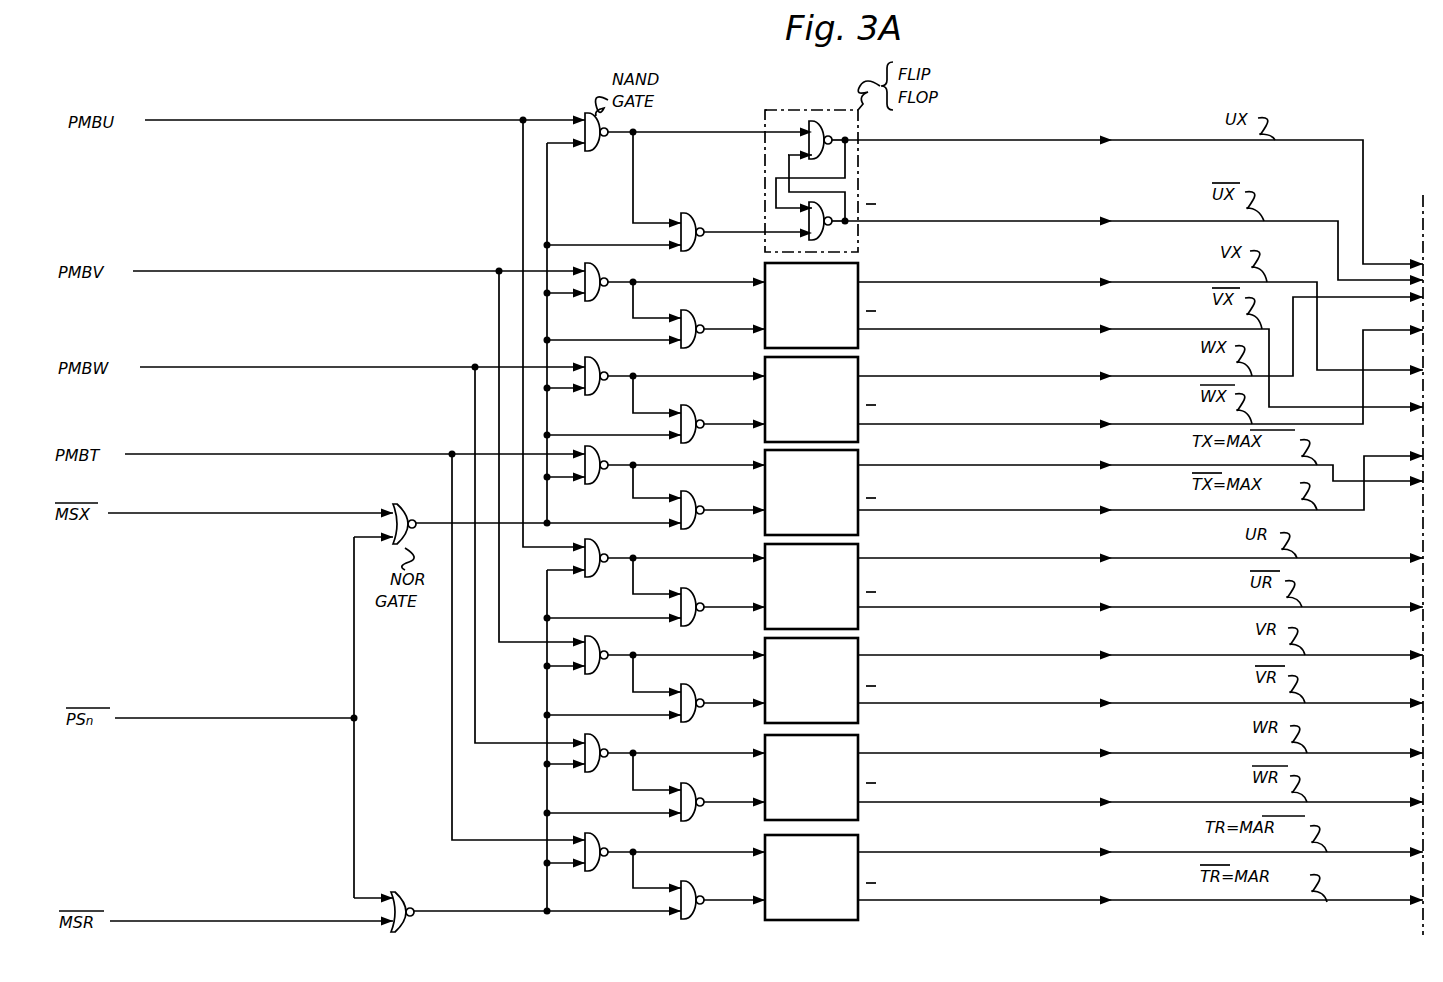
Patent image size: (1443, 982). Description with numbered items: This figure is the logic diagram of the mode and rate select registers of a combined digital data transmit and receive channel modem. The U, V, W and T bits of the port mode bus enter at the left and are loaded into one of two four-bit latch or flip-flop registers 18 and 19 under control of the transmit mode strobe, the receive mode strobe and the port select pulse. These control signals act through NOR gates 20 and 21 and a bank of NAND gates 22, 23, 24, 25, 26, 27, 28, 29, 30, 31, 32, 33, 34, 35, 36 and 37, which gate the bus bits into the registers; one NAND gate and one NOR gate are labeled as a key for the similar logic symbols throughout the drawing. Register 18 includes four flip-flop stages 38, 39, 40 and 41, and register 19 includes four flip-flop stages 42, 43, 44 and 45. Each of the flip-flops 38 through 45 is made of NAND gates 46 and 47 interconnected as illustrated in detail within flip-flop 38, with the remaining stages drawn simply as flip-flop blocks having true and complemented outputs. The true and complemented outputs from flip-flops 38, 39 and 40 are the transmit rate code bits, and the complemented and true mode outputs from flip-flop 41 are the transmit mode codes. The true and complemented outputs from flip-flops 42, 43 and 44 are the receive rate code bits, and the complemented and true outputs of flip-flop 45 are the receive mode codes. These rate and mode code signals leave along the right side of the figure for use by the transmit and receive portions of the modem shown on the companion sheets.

The four-bit latch register 18 is at (748, 118).
The four-bit latch register 19 is at (753, 549).
The NOR gate 20 is at (398, 504).
The NOR gate 21 is at (396, 893).
The NAND gate 22 is at (598, 151).
The NAND gate 23 is at (686, 214).
The NAND gate 24 is at (598, 300).
The NAND gate 25 is at (692, 321).
The NAND gate 26 is at (598, 394).
The NAND gate 27 is at (693, 417).
The NAND gate 28 is at (598, 483).
The NAND gate 29 is at (693, 506).
The NAND gate 30 is at (598, 576).
The NAND gate 31 is at (692, 602).
The NAND gate 32 is at (598, 673).
The NAND gate 33 is at (693, 698).
The NAND gate 34 is at (598, 771).
The NAND gate 35 is at (692, 797).
The NAND gate 36 is at (598, 870).
The NAND gate 37 is at (693, 894).
The flip-flop stage 38 is at (821, 159).
The flip-flop stage 39 is at (855, 297).
The flip-flop stage 40 is at (855, 391).
The flip-flop stage 41 is at (855, 483).
The flip-flop stage 42 is at (855, 577).
The flip-flop stage 43 is at (855, 670).
The flip-flop stage 44 is at (855, 767).
The flip-flop stage 45 is at (855, 868).
The NAND gate 46 is at (830, 134).
The NAND gate 47 is at (830, 228).